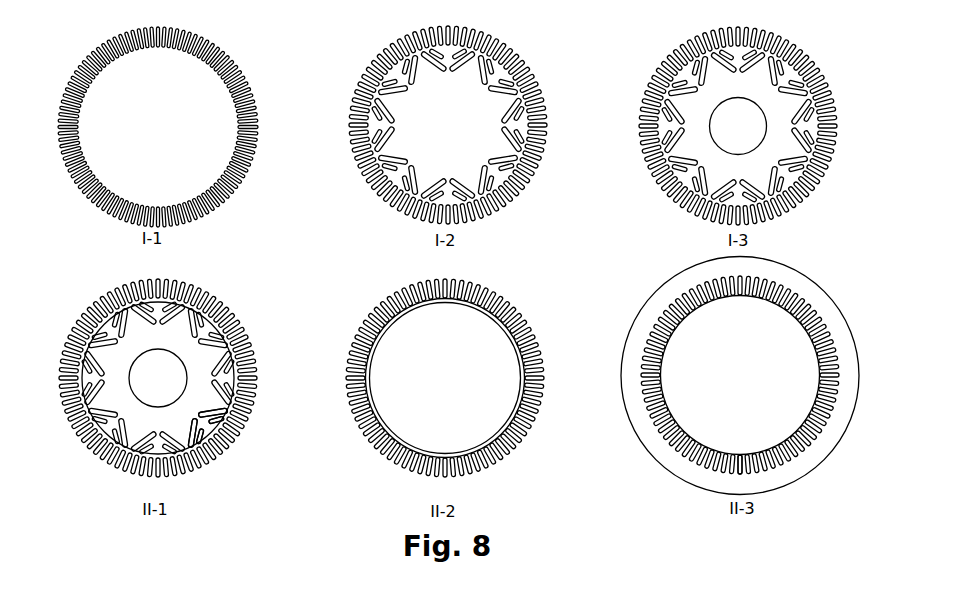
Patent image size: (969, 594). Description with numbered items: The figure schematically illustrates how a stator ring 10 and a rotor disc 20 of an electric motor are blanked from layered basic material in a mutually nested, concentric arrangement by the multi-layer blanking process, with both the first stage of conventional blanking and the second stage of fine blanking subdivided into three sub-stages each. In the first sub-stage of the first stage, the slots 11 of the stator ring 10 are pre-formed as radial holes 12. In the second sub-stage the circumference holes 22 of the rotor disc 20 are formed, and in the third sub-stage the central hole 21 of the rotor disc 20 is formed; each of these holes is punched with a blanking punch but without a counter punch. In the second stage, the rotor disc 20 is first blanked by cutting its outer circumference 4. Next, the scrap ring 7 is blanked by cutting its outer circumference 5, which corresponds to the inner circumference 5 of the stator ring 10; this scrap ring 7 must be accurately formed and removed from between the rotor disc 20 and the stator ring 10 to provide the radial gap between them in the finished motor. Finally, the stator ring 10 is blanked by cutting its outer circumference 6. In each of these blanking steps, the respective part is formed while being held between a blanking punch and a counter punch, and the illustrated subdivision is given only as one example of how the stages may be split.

The radial holes 12 is at (155, 36).
The circumference holes 22 is at (450, 68).
The central hole 21 is at (728, 136).
The rotor disc 20 is at (216, 353).
The outer circumference 4 is at (185, 442).
The scrap ring 7 is at (368, 389).
The outer circumference of scrap ring 5 is at (473, 450).
The slots 11 is at (745, 458).
The stator ring 10 is at (665, 458).
The outer circumference 6 is at (819, 468).